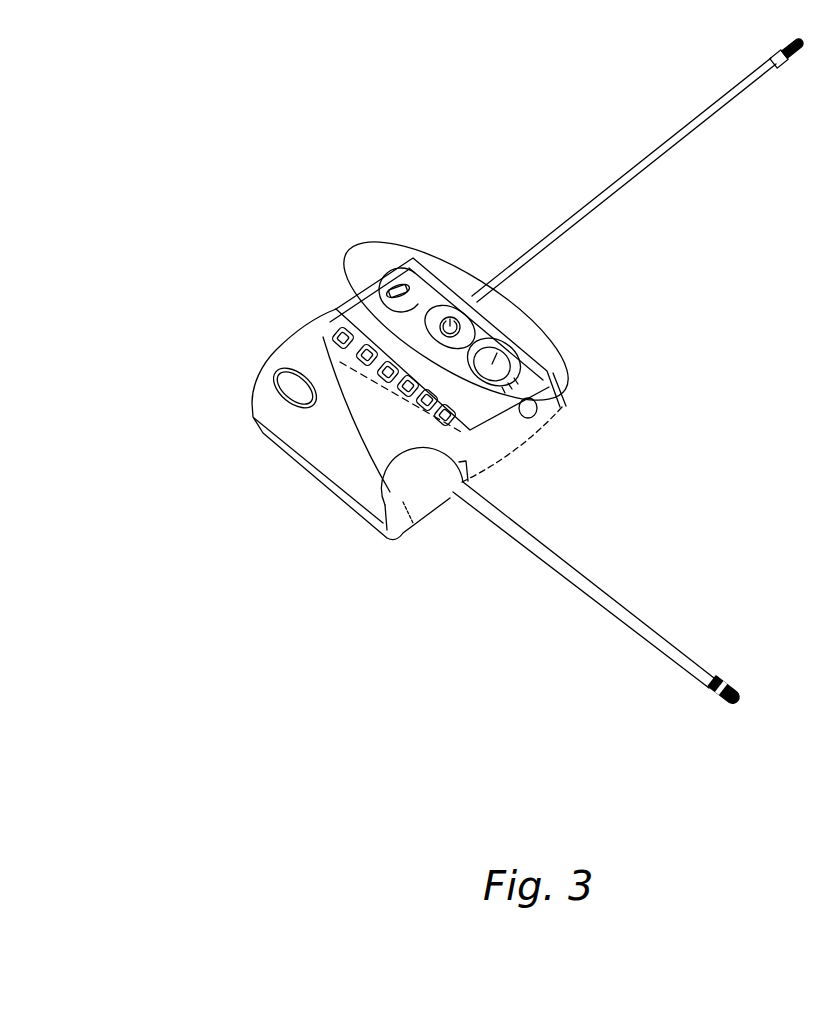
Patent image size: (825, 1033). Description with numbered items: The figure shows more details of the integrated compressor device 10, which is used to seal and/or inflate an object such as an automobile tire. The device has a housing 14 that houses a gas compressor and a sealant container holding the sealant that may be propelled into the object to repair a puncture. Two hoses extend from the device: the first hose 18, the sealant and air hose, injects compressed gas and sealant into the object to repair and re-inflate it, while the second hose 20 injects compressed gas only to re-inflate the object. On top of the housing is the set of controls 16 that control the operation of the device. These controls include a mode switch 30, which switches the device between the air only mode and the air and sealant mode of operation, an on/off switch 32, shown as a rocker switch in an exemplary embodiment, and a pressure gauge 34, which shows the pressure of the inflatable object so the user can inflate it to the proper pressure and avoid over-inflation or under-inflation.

The integrated compressor device 10 is at (268, 247).
The housing 14 is at (349, 505).
The set of controls 16 is at (438, 267).
The first hose 18 is at (606, 595).
The second hose 20 is at (597, 200).
The mode switch 30 is at (393, 288).
The on/off switch 32 is at (452, 320).
The pressure gauge 34 is at (505, 360).